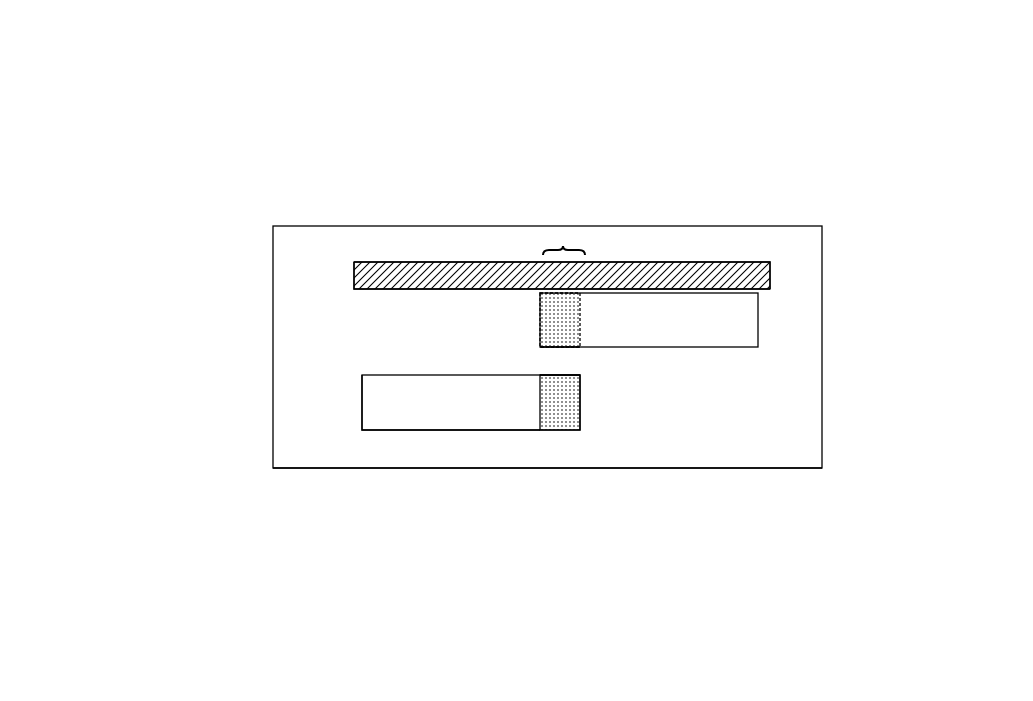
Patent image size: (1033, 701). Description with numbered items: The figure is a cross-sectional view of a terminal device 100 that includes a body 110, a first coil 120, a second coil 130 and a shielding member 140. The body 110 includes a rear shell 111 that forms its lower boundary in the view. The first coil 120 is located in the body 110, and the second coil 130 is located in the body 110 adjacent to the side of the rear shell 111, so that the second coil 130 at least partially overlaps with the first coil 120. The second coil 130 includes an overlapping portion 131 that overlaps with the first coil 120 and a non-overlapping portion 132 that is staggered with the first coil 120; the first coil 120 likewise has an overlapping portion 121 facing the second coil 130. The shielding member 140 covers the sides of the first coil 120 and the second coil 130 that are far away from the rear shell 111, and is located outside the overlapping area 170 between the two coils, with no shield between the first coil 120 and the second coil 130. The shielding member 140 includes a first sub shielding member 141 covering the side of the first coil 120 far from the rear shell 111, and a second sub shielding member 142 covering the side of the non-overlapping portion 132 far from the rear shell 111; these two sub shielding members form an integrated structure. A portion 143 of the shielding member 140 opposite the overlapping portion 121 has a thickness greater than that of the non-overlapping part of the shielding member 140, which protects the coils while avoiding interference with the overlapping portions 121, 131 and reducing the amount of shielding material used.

The terminal device 100 is at (270, 200).
The body 110 is at (808, 400).
The rear shell 111 is at (653, 468).
The first coil 120 is at (737, 315).
The overlapping portion of the first coil 121 is at (545, 330).
The second coil 130 is at (372, 397).
The overlapping portion of the second coil 131 is at (553, 427).
The non-overlapping portion 132 is at (423, 408).
The shielding member 140 is at (685, 118).
The first sub shielding member 141 is at (635, 262).
The second sub shielding member 142 is at (468, 272).
The portion of the shielding member opposite the overlapping portion 143 is at (563, 246).
The overlapping area 170 is at (558, 358).